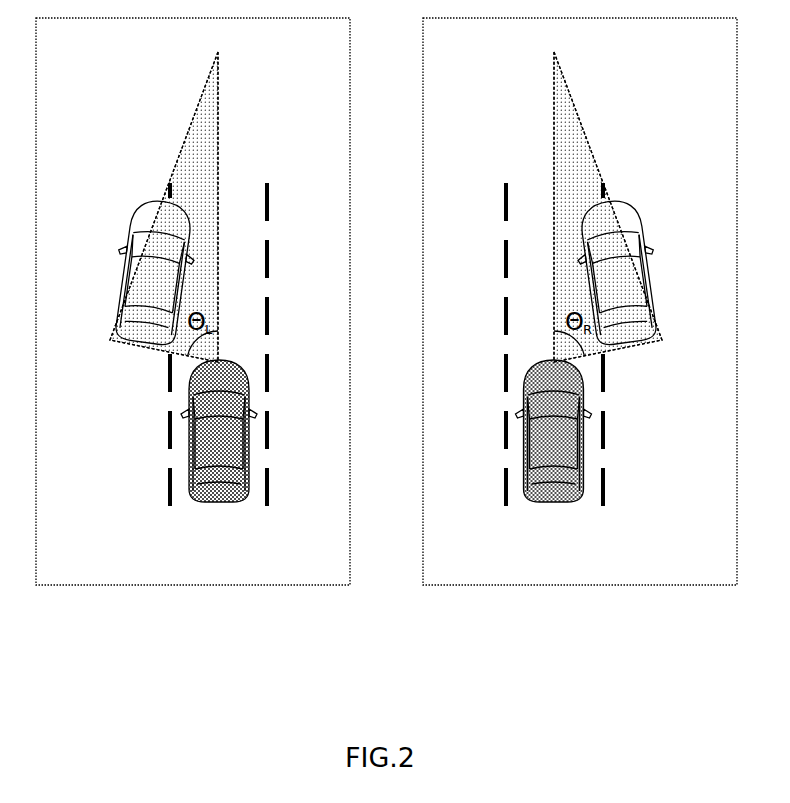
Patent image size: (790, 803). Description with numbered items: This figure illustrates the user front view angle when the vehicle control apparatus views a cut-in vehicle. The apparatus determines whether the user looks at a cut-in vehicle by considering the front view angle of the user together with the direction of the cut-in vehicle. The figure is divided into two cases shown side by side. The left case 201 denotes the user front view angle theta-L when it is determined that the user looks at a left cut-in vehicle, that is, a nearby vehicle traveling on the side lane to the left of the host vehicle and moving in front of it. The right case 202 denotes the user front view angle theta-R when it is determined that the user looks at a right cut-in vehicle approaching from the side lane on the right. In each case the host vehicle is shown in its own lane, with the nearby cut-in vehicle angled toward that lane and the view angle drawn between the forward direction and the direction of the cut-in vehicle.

The user front view angle for left cut-in vehicle 201 is at (193, 301).
The user front view angle for right cut-in vehicle 202 is at (580, 301).